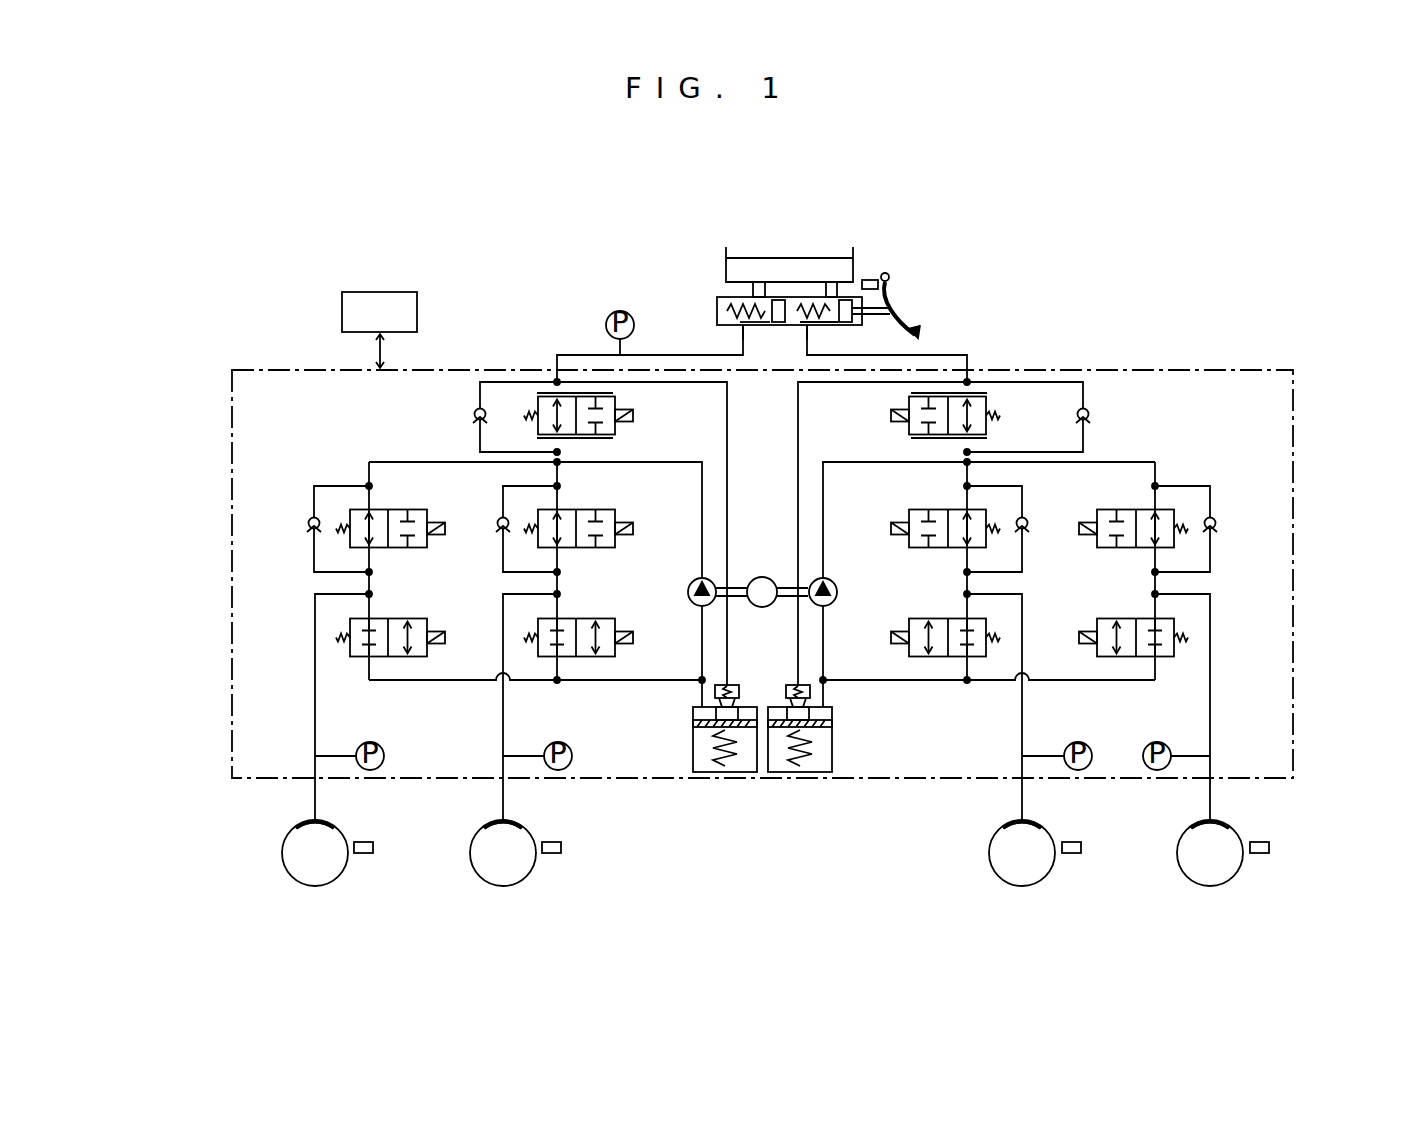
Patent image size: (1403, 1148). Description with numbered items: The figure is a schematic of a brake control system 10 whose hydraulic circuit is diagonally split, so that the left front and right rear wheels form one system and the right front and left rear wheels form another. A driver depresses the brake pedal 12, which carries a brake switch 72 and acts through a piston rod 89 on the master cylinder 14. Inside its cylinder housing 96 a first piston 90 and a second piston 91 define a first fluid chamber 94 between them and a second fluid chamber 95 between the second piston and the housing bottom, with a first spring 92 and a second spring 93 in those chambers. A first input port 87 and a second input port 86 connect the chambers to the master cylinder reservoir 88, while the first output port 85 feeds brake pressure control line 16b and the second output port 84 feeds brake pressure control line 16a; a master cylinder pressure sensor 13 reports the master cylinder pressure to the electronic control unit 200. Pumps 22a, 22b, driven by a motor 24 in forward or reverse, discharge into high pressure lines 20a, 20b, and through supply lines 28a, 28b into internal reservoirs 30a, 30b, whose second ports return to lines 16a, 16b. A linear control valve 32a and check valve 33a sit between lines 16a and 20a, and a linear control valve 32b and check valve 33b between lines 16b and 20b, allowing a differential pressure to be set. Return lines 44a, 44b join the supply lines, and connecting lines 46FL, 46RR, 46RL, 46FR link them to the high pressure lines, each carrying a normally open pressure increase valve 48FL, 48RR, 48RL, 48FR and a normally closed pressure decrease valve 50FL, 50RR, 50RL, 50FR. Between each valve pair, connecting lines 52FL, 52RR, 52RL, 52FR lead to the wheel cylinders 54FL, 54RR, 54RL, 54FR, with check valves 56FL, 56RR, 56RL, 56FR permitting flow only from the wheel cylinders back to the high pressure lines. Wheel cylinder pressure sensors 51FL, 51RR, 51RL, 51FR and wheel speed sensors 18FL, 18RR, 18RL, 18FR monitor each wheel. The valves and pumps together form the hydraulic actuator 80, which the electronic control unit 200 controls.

The brake control system 10 is at (608, 288).
The brake pedal 12 is at (935, 302).
The master cylinder pressure sensor 13 is at (606, 320).
The master cylinder 14 is at (760, 276).
The brake pressure control line 16a is at (558, 357).
The brake pressure control line 16b is at (985, 344).
The left front-wheel wheel speed sensor 18FL is at (393, 847).
The right rear-wheel wheel speed sensor 18RR is at (580, 847).
The left rear-wheel wheel speed sensor 18RL is at (1100, 847).
The right front-wheel wheel speed sensor 18FR is at (1290, 847).
The high pressure line 20a is at (445, 462).
The high pressure line 20b is at (1095, 462).
The pump 22a is at (697, 607).
The pump 22b is at (828, 607).
The motor 24 is at (762, 577).
The supply line 28a is at (702, 665).
The supply line 28b is at (823, 666).
The internal reservoir 30a is at (693, 752).
The internal reservoir 30b is at (832, 752).
The linear control valve 32a is at (615, 436).
The linear control valve 32b is at (950, 436).
The check valve 33a is at (477, 418).
The check valve 33b is at (1089, 418).
The return line 44a is at (714, 700).
The return line 44b is at (811, 700).
The left front wheel connecting line 46FL is at (370, 573).
The right rear wheel connecting line 46RR is at (563, 595).
The left rear wheel connecting line 46RL is at (962, 590).
The right front wheel connecting line 46FR is at (1154, 573).
The pressure increase valve 48FL is at (395, 499).
The pressure increase valve 48RR is at (575, 509).
The pressure increase valve 48RL is at (947, 509).
The pressure increase valve 48FR is at (1140, 509).
The pressure decrease valve 50FL is at (392, 618).
The pressure decrease valve 50RR is at (575, 618).
The pressure decrease valve 50RL is at (945, 620).
The pressure decrease valve 50FR is at (1130, 618).
The left front-wheel wheel cylinder pressure sensor 51FL is at (393, 735).
The right rear-wheel wheel cylinder pressure sensor 51RR is at (560, 742).
The left rear-wheel wheel cylinder pressure sensor 51RL is at (1076, 741).
The right front-wheel wheel cylinder pressure sensor 51FR is at (1158, 741).
The connecting line 52FL is at (312, 594).
The connecting line 52RR is at (502, 594).
The connecting line 52RL is at (1024, 594).
The connecting line 52FR is at (1210, 594).
The left front-wheel wheel cylinder 54FL is at (352, 808).
The right rear-wheel wheel cylinder 54RR is at (540, 808).
The left rear-wheel wheel cylinder 54RL is at (1060, 808).
The right front-wheel wheel cylinder 54FR is at (1248, 808).
The check valve 56FL is at (312, 520).
The check valve 56RR is at (497, 523).
The check valve 56RL is at (1050, 516).
The check valve 56FR is at (1212, 520).
The brake switch 72 is at (878, 282).
The hydraulic actuator 80 is at (1260, 370).
The second output port 84 is at (740, 326).
The first output port 85 is at (800, 326).
The second input port 86 is at (762, 297).
The first input port 87 is at (832, 297).
The master cylinder reservoir 88 is at (726, 256).
The piston rod 89 is at (880, 315).
The first piston 90 is at (848, 323).
The second piston 91 is at (777, 315).
The first spring 92 is at (826, 318).
The second spring 93 is at (735, 309).
The first fluid chamber 94 is at (812, 308).
The second fluid chamber 95 is at (752, 295).
The cylinder housing 96 is at (718, 305).
The electronic control unit 200 is at (410, 272).